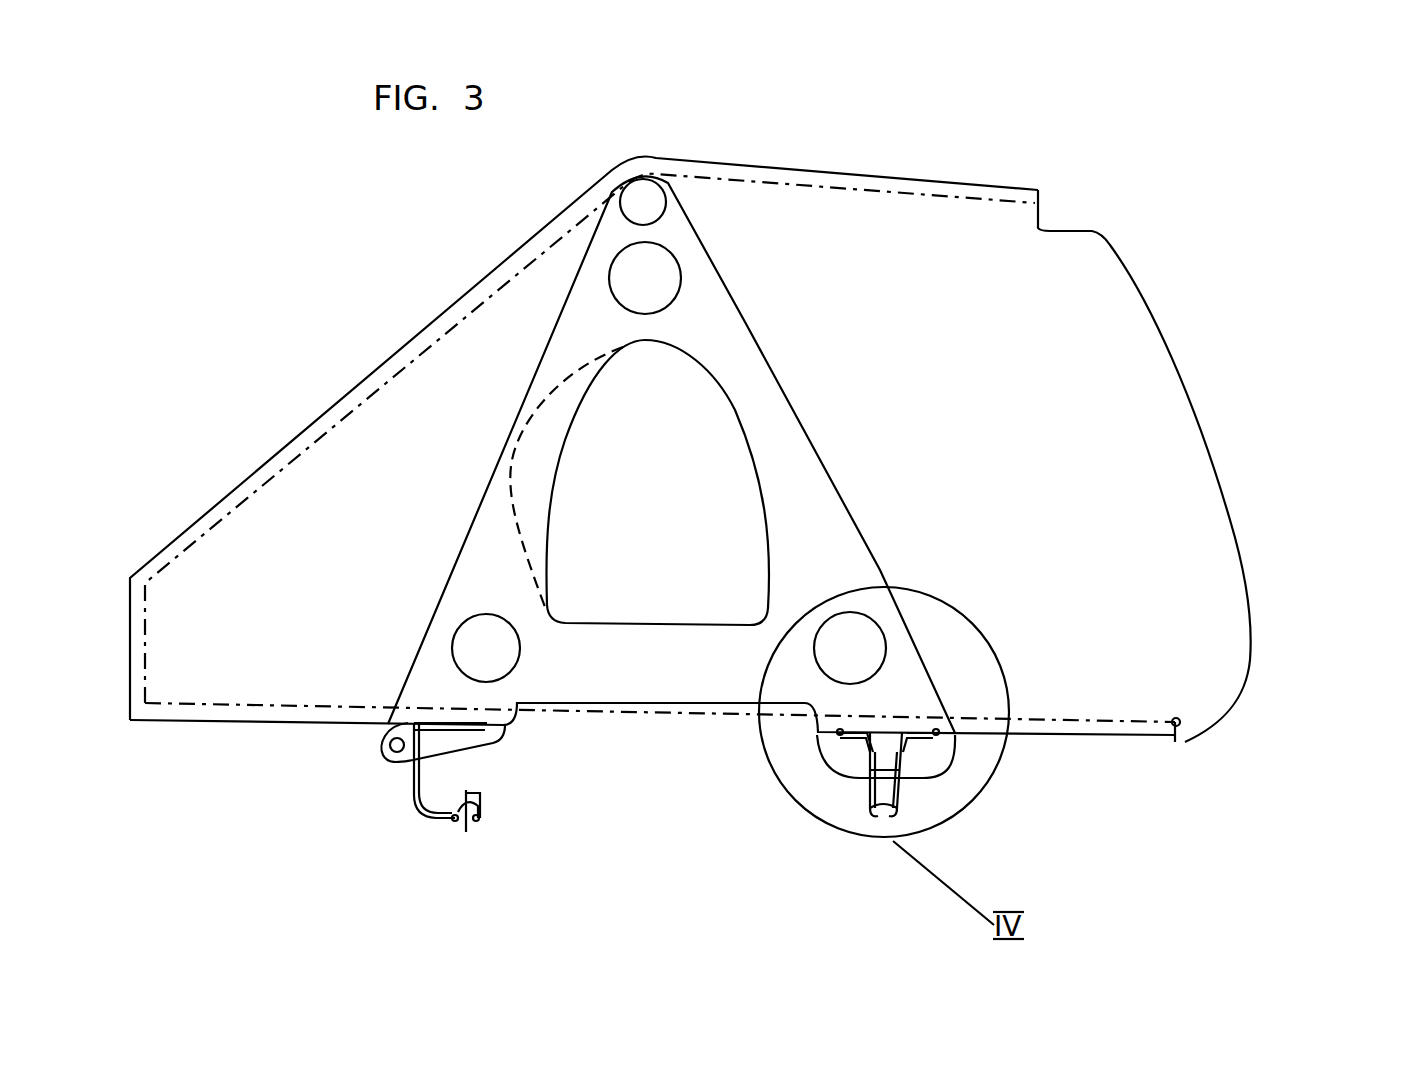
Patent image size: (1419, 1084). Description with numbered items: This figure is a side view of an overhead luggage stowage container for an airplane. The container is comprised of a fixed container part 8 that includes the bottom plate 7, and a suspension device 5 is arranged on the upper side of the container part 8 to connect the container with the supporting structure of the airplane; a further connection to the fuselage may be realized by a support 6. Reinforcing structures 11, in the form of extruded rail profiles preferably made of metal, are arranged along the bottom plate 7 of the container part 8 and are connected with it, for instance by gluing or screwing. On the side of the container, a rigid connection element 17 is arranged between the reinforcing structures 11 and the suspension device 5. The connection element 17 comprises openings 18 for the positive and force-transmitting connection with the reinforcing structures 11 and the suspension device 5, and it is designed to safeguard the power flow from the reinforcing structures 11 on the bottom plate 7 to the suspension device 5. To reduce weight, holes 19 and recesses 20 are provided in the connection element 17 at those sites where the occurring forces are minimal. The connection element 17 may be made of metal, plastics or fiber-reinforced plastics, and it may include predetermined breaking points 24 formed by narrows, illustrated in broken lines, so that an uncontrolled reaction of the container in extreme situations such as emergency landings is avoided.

The suspension device 5 is at (662, 190).
The support 6 is at (1256, 464).
The bottom plate 7 is at (295, 713).
The container part 8 is at (306, 427).
The reinforcing structures 11 is at (418, 763).
The connection element 17 is at (782, 453).
The openings 18 is at (413, 740).
The holes 19 is at (651, 278).
The recesses 20 is at (651, 456).
The predetermined breaking points 24 is at (497, 424).